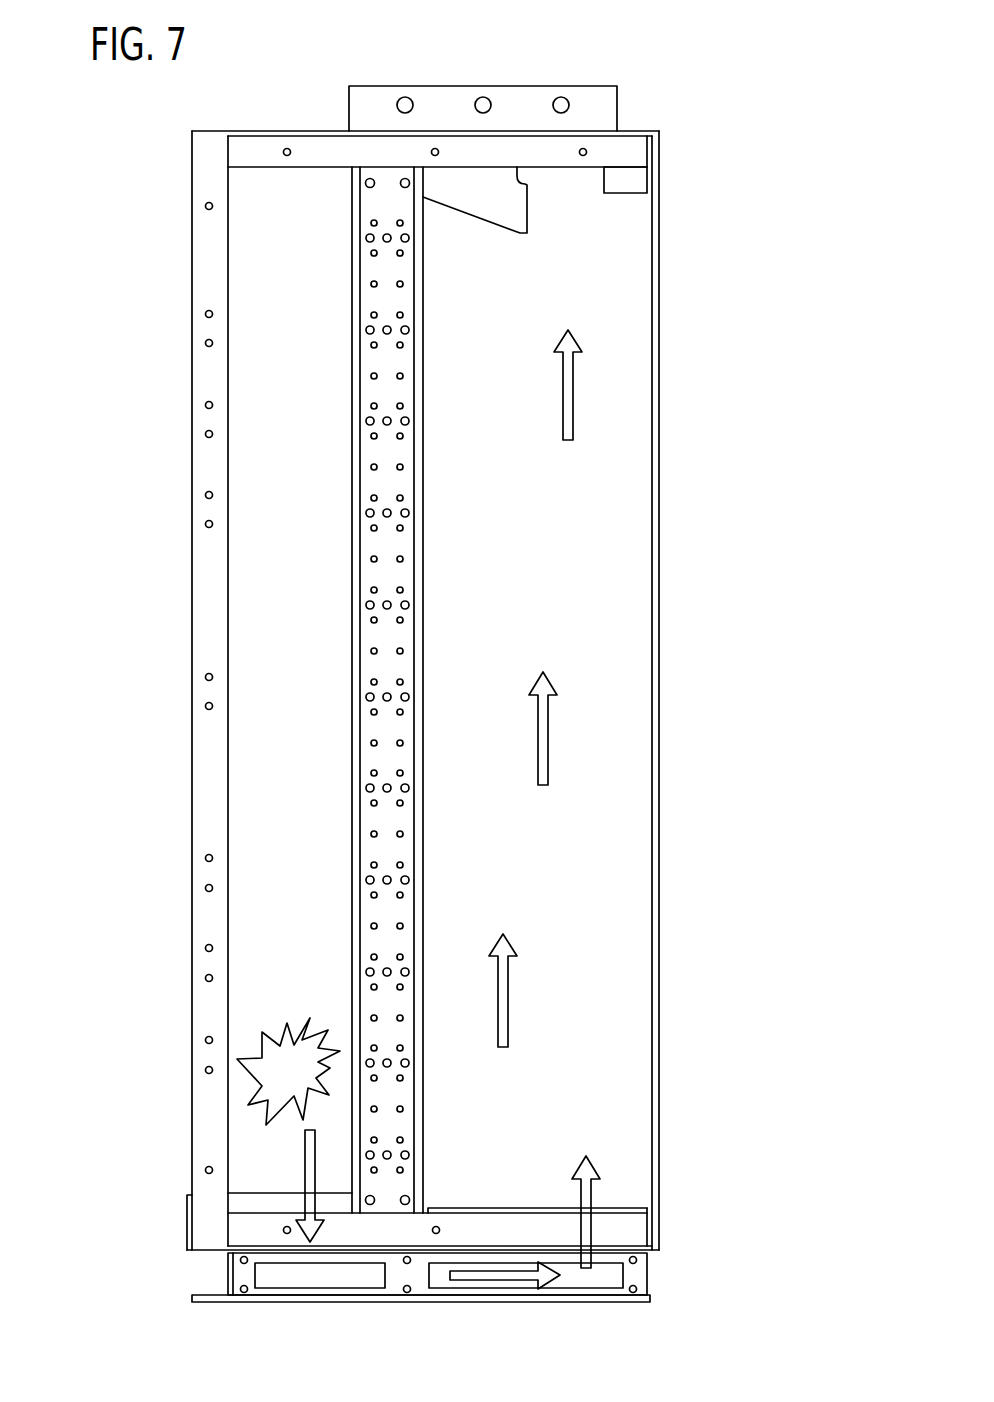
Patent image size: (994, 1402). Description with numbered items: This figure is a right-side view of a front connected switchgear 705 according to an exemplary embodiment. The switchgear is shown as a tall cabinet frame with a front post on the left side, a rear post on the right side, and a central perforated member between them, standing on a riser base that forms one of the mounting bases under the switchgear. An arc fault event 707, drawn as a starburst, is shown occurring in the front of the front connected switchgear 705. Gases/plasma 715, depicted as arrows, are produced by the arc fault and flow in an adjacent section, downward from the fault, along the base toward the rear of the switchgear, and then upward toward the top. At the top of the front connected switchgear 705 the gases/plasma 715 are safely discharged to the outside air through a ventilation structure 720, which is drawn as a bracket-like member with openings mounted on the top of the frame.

The front connected switchgear 705 is at (725, 78).
The ventilation structure 720 is at (483, 85).
The gases/plasma 715 is at (507, 996).
The arc fault event 707 is at (288, 1070).